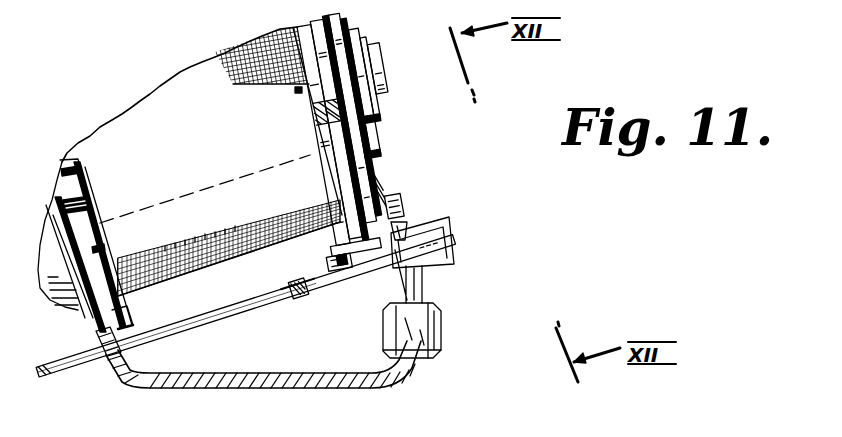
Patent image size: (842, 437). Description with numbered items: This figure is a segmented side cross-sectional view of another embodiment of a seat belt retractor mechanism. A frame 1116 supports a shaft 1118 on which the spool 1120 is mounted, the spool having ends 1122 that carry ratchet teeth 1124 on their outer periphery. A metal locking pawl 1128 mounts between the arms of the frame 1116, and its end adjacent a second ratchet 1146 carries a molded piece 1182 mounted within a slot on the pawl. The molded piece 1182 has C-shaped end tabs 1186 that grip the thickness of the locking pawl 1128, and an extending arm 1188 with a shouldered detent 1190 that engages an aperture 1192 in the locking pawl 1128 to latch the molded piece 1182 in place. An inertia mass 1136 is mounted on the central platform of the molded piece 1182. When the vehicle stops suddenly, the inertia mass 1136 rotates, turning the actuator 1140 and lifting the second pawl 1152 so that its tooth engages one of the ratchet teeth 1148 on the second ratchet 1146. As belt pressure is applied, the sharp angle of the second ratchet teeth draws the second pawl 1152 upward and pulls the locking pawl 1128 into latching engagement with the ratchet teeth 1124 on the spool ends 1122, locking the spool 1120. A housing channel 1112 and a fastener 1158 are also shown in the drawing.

The housing channel 1112 is at (200, 380).
The frame 1116 is at (325, 107).
The shaft 1118 is at (370, 50).
The spool 1120 is at (177, 198).
The ends 1122 is at (288, 28).
The ratchet teeth 1124 is at (296, 90).
The locking pawl 1128 is at (72, 368).
The inertia mass 1136 is at (440, 333).
The actuator 1140 is at (456, 242).
The second ratchet 1146 is at (365, 118).
The ratchet teeth 1148 is at (375, 153).
The second pawl 1152 is at (400, 197).
The fastener 1158 is at (358, 246).
The molded piece 1182 is at (454, 260).
The C-shaped end tabs 1186 is at (428, 258).
The extending arm 1188 is at (354, 266).
The shouldered detent 1190 is at (300, 301).
The aperture 1192 is at (290, 283).